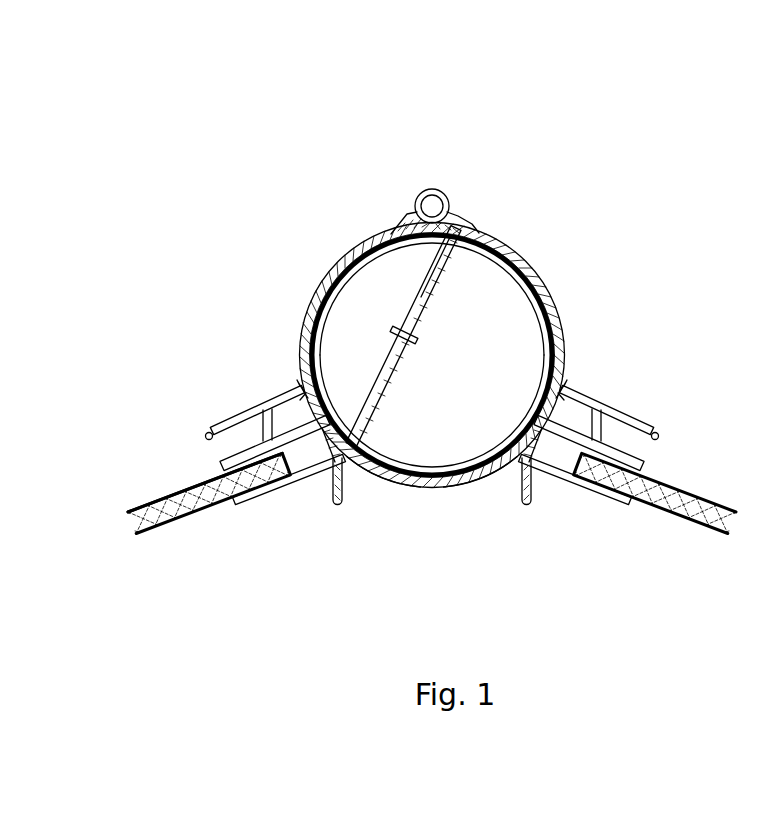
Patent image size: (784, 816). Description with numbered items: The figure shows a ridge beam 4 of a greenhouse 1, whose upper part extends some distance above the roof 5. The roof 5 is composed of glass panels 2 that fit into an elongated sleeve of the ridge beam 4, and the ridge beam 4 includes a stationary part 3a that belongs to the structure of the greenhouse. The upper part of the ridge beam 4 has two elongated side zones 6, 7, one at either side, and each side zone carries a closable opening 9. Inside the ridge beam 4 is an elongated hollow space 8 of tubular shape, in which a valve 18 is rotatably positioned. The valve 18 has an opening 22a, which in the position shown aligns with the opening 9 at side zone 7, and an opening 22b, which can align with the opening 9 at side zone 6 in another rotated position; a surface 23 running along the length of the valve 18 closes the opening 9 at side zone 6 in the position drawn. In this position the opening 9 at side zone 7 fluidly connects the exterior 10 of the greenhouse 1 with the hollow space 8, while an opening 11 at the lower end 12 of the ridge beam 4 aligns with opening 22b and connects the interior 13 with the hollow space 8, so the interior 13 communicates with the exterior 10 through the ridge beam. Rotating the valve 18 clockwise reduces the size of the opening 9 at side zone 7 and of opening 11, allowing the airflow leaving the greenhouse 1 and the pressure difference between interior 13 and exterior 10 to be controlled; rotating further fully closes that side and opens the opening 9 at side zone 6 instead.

The greenhouse 1 is at (183, 520).
The glass panels 2 is at (195, 498).
The stationary part 3a is at (292, 478).
The ridge beam 4 is at (479, 228).
The roof 5 is at (148, 503).
The side zone 6 is at (300, 342).
The side zone 7 is at (555, 353).
The elongated hollow space 8 is at (438, 317).
The closable opening 9 is at (312, 307).
The exterior 10 is at (447, 152).
The opening 11 is at (457, 488).
The lower end 12 is at (408, 488).
The interior 13 is at (443, 606).
The valve 18 is at (437, 282).
The opening 22a is at (536, 305).
The opening 22b is at (431, 468).
The surface 23 is at (418, 300).